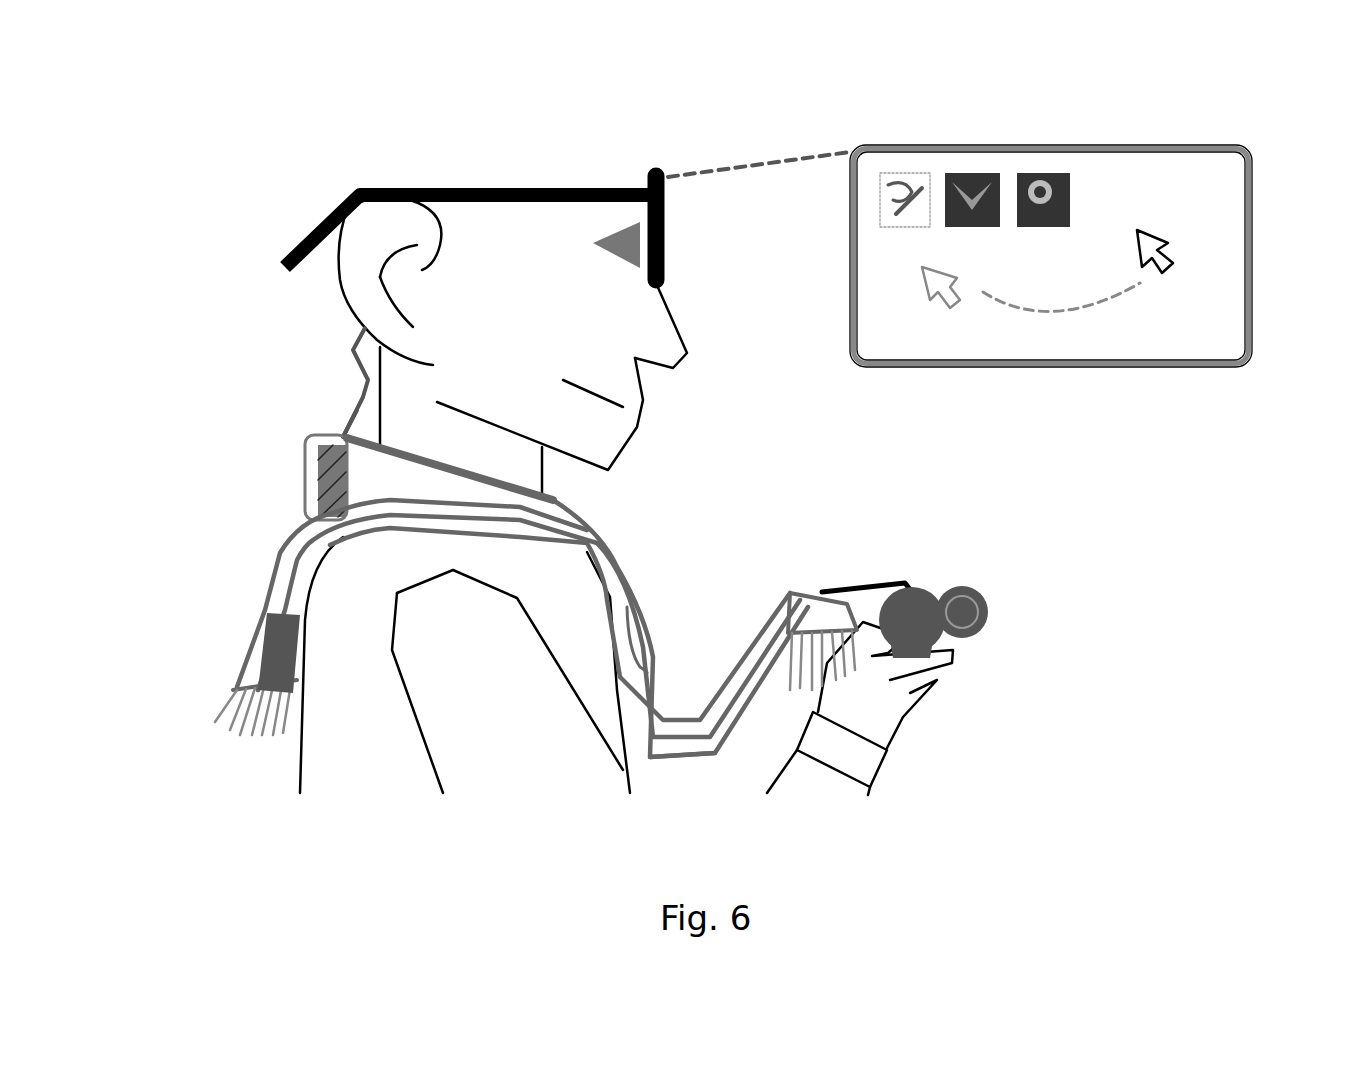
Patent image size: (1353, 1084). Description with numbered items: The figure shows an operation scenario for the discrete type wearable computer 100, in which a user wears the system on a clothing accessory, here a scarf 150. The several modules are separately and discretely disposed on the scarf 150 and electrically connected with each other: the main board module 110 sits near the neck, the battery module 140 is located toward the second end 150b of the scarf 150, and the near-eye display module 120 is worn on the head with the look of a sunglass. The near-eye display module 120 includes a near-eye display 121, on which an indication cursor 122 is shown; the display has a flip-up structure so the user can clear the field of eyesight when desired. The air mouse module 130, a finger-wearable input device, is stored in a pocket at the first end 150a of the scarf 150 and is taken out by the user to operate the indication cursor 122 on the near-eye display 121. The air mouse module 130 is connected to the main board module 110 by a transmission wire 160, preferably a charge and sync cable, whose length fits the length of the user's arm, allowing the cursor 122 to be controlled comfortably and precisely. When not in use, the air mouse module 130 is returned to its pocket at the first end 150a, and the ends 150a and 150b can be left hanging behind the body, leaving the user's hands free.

The discrete type wearable computer 100 is at (172, 509).
The main board module 110 is at (327, 463).
The near-eye display module 120 is at (574, 188).
The near-eye display 121 is at (1165, 145).
The indication cursor 122 is at (1157, 237).
The air mouse module 130 is at (977, 592).
The battery module 140 is at (260, 658).
The scarf 150 is at (280, 553).
The first end 150a is at (806, 580).
The second end 150b is at (244, 745).
The transmission wire 160 is at (677, 733).